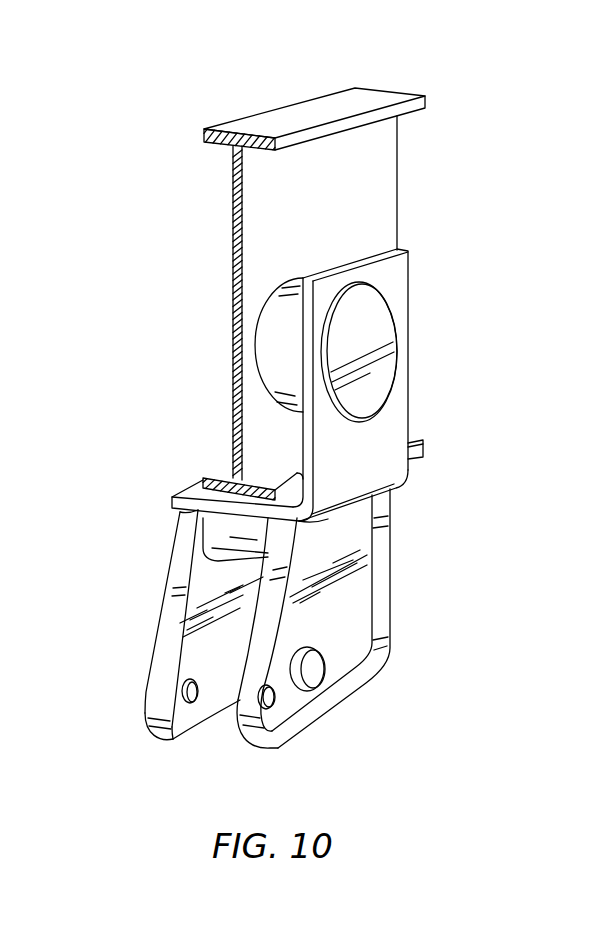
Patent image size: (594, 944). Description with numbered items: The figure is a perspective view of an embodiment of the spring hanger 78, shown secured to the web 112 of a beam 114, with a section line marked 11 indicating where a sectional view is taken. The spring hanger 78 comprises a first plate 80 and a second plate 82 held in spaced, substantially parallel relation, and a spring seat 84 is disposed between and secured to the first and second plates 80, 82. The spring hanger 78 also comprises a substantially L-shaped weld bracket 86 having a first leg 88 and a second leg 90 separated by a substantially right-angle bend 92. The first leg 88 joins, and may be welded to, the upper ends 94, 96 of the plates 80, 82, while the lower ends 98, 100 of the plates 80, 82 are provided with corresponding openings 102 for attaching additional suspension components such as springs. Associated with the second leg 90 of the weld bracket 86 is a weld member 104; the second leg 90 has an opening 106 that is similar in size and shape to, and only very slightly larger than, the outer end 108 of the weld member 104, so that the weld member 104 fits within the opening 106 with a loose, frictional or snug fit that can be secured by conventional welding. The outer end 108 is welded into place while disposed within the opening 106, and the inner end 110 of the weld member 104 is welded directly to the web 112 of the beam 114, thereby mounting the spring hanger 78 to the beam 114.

The section line 11- 11 is at (44, 845).
The spring hanger 78 is at (300, 503).
The first plate 80 is at (160, 657).
The second plate 82 is at (343, 613).
The spring seat 84 is at (237, 550).
The weld bracket 86 is at (380, 433).
The first leg 88 is at (188, 490).
The second leg 90 is at (395, 273).
The bend 92 is at (413, 492).
The upper end 94 is at (187, 520).
The upper end 96 is at (328, 520).
The lower end 98 is at (164, 729).
The lower end 100 is at (257, 742).
The openings 102 is at (185, 712).
The weld member 104 is at (278, 323).
The opening 106 is at (393, 380).
The outer end 108 is at (370, 313).
The inner end 110 is at (267, 300).
The web 112 is at (343, 198).
The beam 114 is at (266, 122).